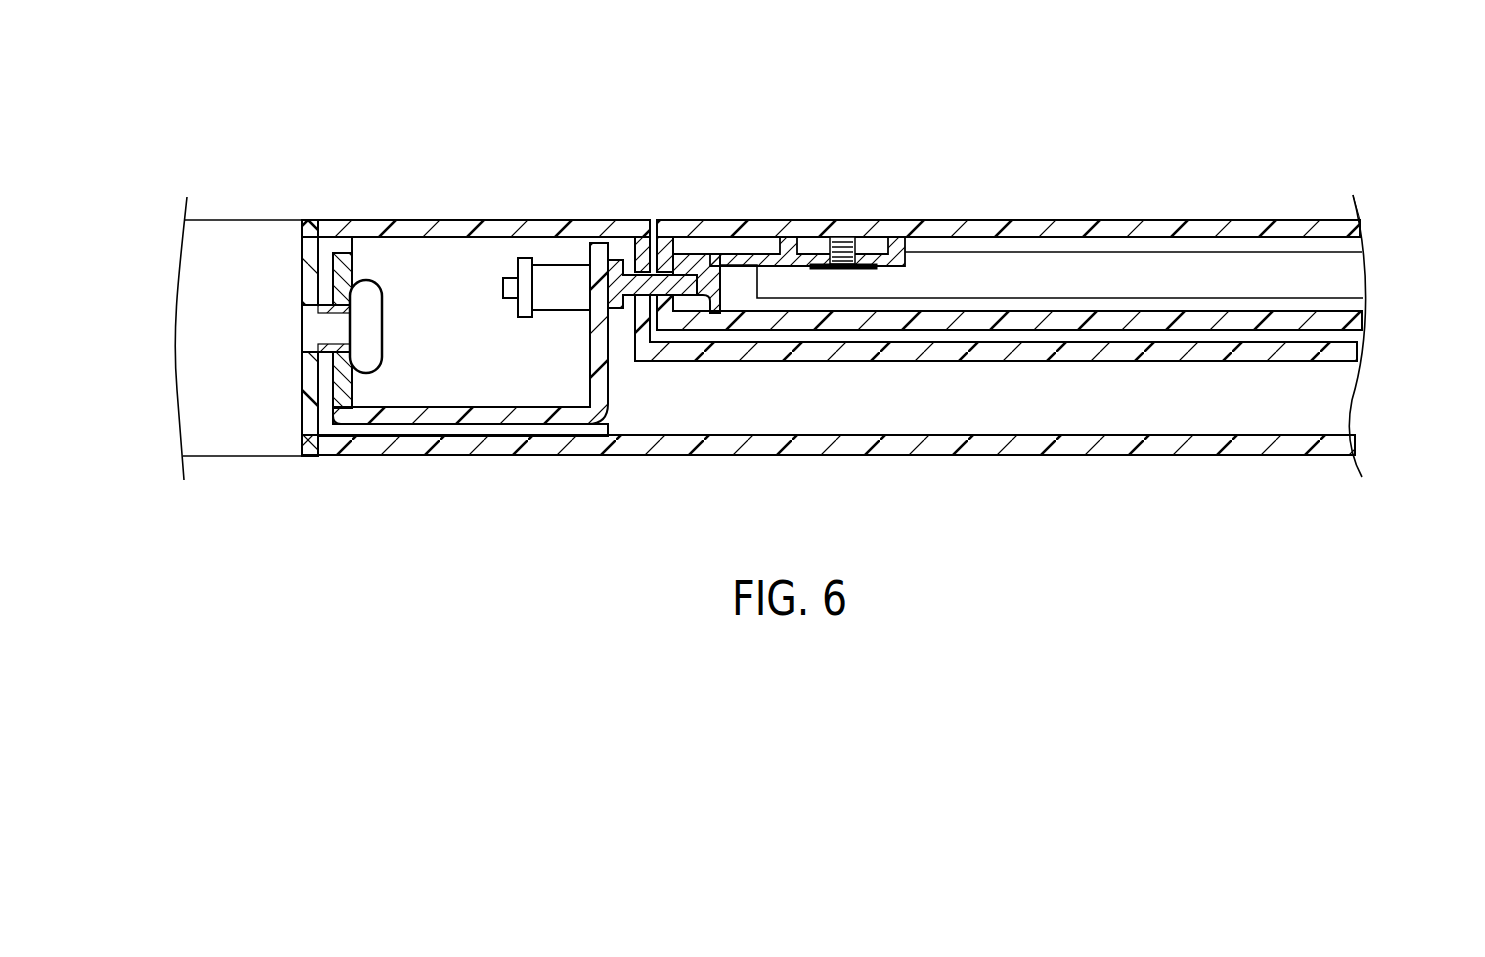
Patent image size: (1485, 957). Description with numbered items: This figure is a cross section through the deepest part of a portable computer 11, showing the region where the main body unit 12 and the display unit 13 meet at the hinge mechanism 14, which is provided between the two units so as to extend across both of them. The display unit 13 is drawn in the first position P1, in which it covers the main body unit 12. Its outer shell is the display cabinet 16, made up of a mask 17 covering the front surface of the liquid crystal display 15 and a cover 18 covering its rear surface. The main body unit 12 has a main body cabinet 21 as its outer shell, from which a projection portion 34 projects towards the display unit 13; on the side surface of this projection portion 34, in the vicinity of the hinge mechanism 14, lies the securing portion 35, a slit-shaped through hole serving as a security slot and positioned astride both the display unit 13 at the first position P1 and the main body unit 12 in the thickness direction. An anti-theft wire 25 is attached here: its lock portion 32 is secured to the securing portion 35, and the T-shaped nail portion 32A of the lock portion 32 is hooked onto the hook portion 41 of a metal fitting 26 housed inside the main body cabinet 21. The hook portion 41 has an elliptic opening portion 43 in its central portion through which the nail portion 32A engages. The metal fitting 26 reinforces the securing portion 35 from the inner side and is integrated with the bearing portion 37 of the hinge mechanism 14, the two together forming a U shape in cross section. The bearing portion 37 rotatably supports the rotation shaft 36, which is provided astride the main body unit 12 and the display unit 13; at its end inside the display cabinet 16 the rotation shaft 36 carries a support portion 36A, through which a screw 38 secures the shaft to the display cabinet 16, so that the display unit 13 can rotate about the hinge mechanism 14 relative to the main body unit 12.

The portable computer 11 is at (955, 118).
The main body unit 12 is at (476, 192).
The display unit 13 is at (1029, 241).
The hinge mechanism 14 is at (622, 248).
The liquid crystal display 15 is at (1130, 250).
The display cabinet 16 is at (1001, 226).
The mask 17 is at (1355, 318).
The cover 18 is at (1199, 222).
The main body cabinet 21 is at (1100, 457).
The anti-theft wire 25 is at (253, 250).
The metal fitting 26 is at (332, 392).
The lock portion 32 is at (197, 276).
The nail portion 32A is at (383, 318).
The projection portion 34 is at (545, 220).
The securing portion 35 is at (302, 362).
The rotation shaft 36 is at (684, 262).
The support portion 36A is at (766, 254).
The bearing portion 37 is at (590, 352).
The screw 38 is at (862, 270).
The hook portion 41 is at (361, 270).
The opening portion 43 is at (342, 358).
The first position P1 is at (1385, 229).